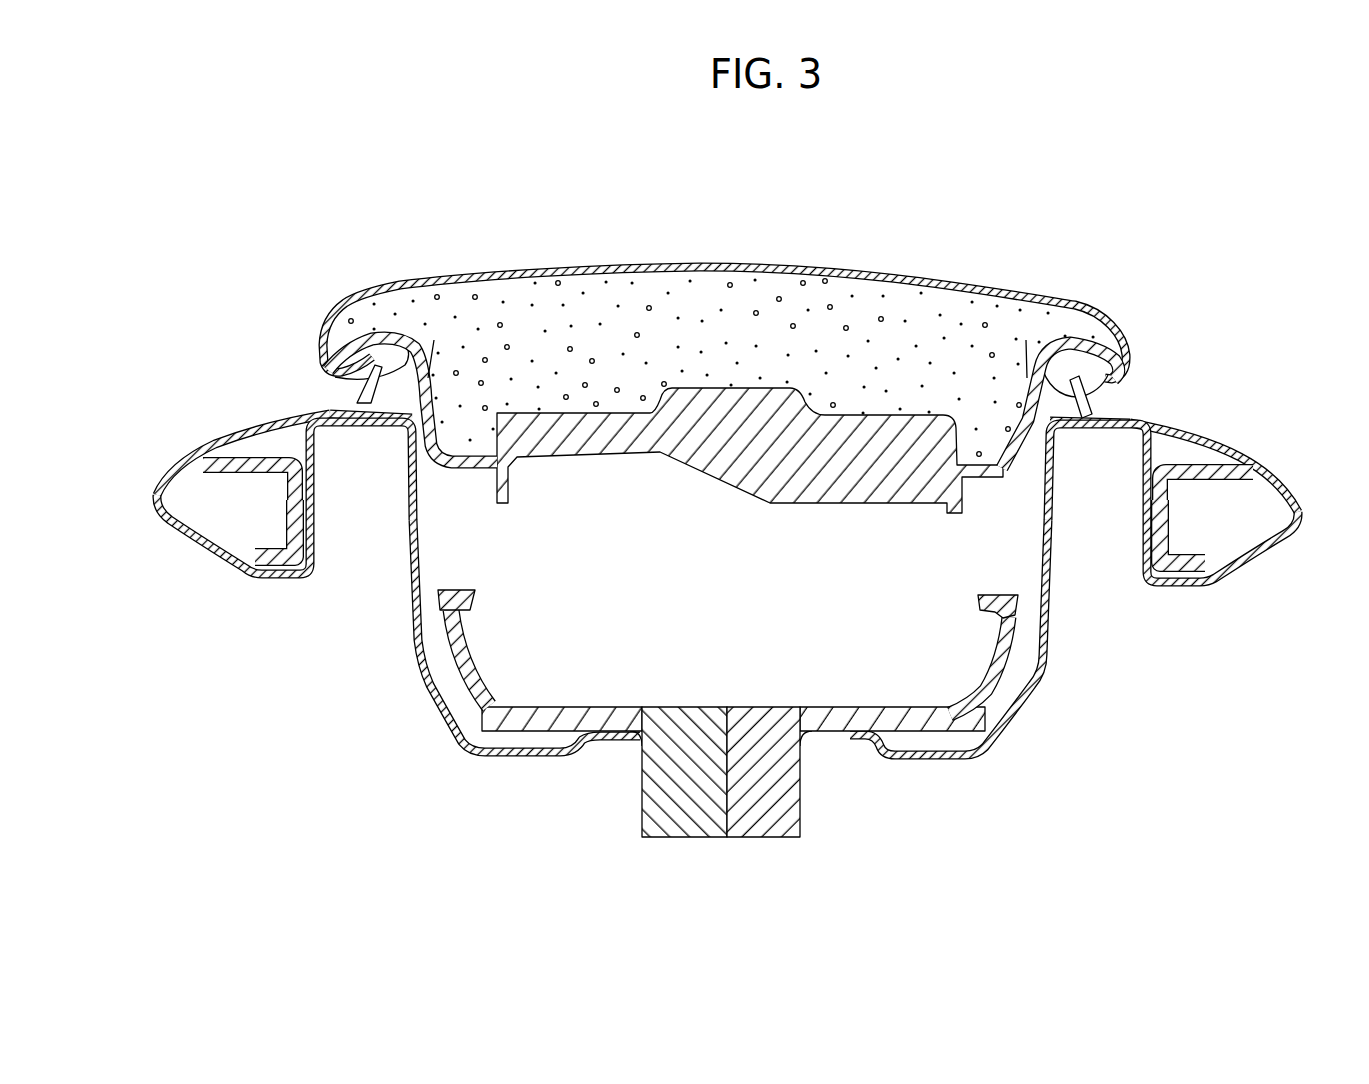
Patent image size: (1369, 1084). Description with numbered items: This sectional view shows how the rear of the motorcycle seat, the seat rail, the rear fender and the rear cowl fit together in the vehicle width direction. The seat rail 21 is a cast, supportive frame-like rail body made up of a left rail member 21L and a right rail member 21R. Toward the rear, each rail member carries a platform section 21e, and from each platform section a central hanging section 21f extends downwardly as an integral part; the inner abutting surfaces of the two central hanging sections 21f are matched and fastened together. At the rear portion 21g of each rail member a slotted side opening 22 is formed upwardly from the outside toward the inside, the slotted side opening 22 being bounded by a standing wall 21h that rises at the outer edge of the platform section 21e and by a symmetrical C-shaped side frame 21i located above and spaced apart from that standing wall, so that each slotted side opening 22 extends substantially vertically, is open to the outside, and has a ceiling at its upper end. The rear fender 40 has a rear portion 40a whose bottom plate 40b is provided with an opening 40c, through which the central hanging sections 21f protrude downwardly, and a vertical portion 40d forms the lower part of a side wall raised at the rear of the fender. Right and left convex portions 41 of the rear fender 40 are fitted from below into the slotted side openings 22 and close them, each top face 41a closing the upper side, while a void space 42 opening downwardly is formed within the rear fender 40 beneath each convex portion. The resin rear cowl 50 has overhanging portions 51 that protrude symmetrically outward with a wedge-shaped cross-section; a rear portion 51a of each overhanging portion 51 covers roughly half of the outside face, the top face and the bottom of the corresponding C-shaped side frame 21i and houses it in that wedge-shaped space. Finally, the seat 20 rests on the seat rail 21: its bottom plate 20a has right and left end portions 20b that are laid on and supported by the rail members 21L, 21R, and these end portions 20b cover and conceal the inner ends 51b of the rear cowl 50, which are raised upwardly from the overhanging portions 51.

The seat 20 is at (931, 262).
The bottom plate 20a is at (700, 453).
The end portions 20b is at (345, 335).
The seat rail 21 is at (730, 655).
The left rail member 21L is at (428, 692).
The right rail member 21R is at (1030, 656).
The platform section 21e is at (560, 705).
The central hanging section 21f is at (687, 818).
The rear portion 21g is at (230, 524).
The standing wall 21h is at (758, 696).
The C-shaped side frame 21i is at (210, 454).
The slotted side opening 22 is at (323, 507).
The rear fender 40 is at (746, 647).
The rear portion 40a is at (950, 762).
The bottom plate 40b is at (527, 757).
The opening 40c is at (650, 707).
The vertical portion 40d is at (435, 625).
The convex portion 41 is at (311, 400).
The top face 41a is at (320, 403).
The void space 42 is at (370, 481).
The rear cowl 50 is at (699, 435).
The overhanging portion 51 is at (699, 435).
The rear portion 51a is at (150, 502).
The inner end 51b is at (434, 340).